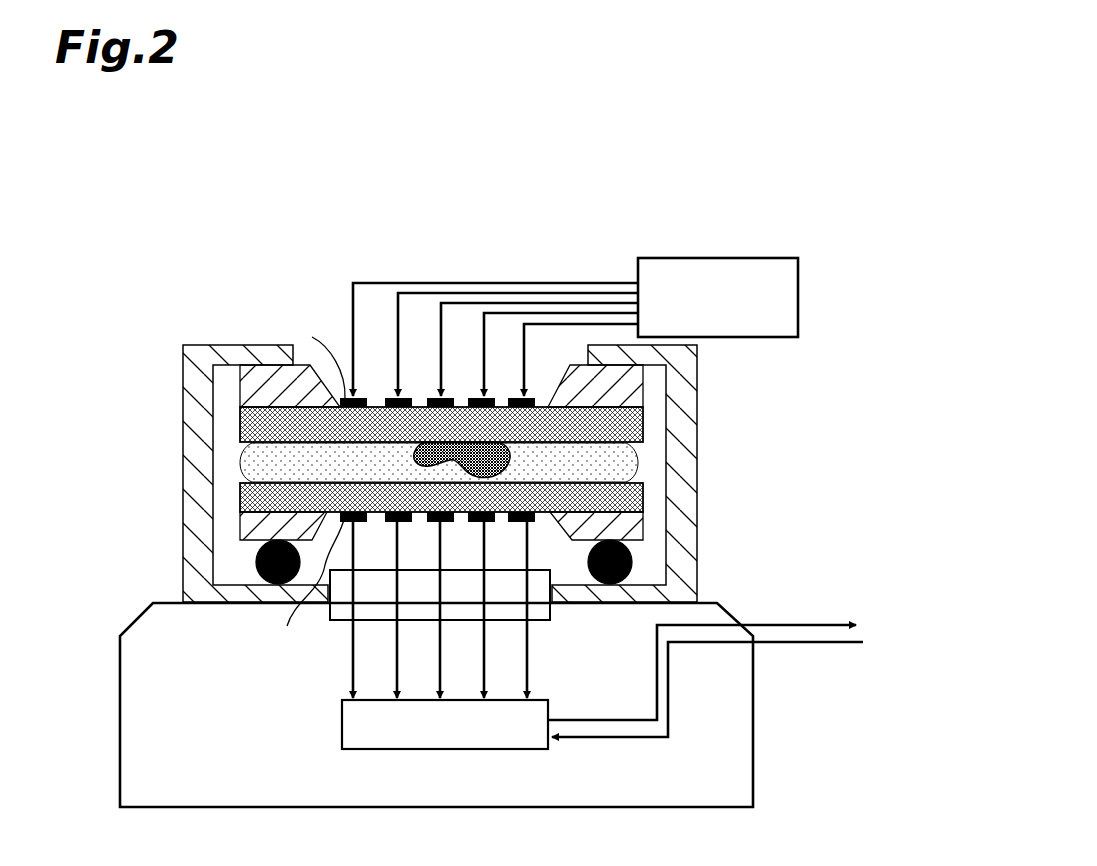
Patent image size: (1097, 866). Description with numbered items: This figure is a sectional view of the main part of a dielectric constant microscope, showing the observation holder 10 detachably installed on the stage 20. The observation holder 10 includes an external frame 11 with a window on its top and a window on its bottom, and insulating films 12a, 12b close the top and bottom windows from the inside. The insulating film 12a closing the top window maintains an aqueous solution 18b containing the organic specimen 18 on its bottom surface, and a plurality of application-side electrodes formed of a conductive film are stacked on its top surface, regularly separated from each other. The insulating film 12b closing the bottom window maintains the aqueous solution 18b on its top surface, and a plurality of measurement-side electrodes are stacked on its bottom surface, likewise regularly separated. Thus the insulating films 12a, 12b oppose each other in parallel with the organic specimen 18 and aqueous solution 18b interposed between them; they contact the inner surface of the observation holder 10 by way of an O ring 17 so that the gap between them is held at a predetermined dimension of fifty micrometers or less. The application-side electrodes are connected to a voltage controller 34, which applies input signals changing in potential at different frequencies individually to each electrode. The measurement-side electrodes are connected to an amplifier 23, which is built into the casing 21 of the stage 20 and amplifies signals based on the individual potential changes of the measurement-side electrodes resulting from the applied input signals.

The observation holder 10 is at (148, 327).
The external frame 11 is at (183, 372).
The insulating film 12a is at (643, 425).
The insulating film 12b is at (643, 497).
The O ring 17 is at (258, 566).
The organic specimen 18 is at (510, 455).
The aqueous solution 18b is at (245, 463).
The stage 20 is at (113, 598).
The casing 21 is at (753, 752).
The amplifier 23 is at (449, 746).
The voltage controller 34 is at (724, 311).